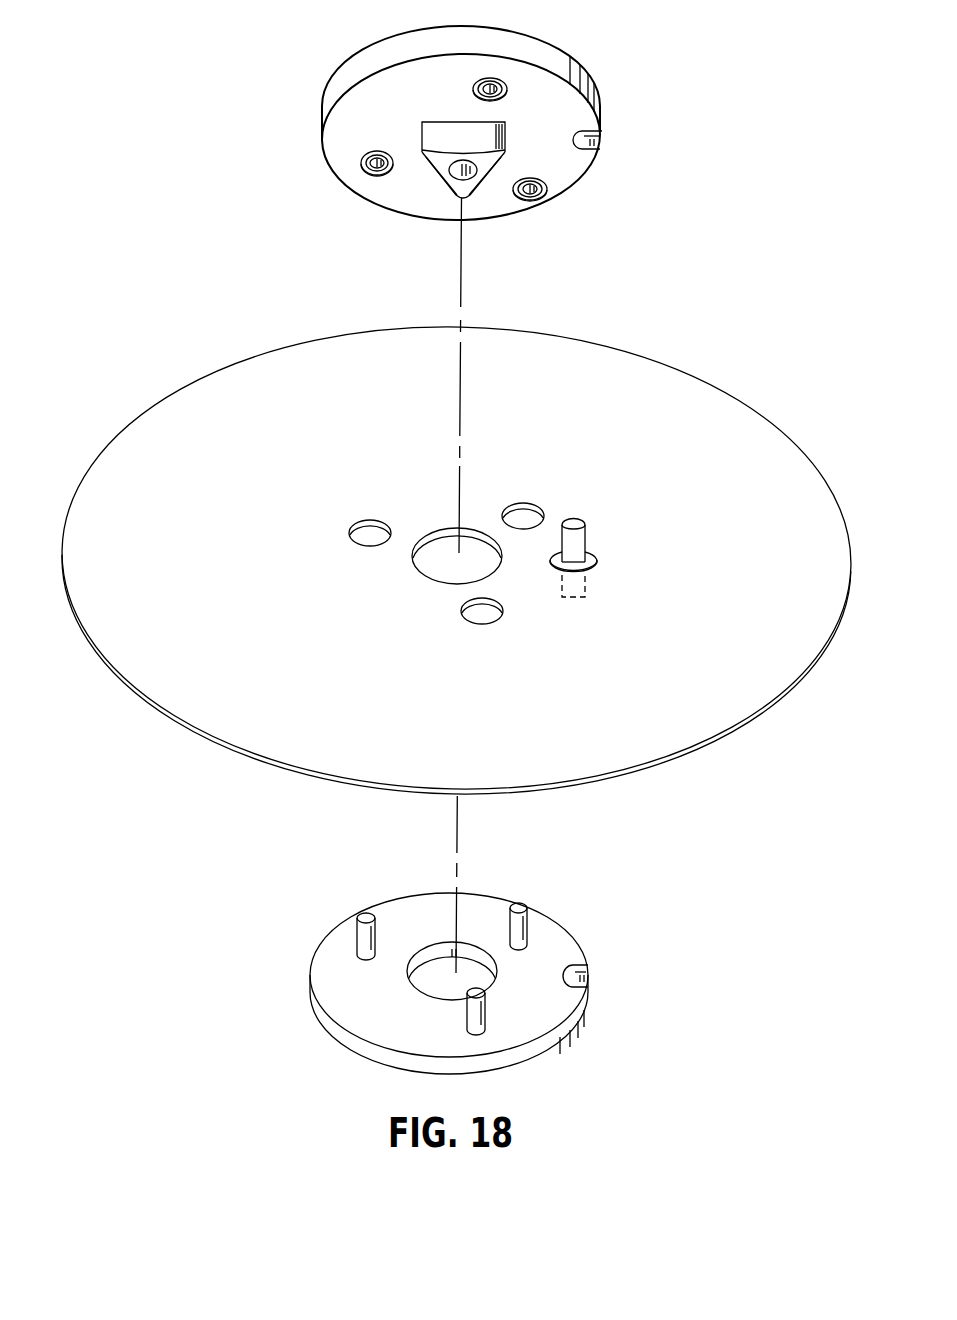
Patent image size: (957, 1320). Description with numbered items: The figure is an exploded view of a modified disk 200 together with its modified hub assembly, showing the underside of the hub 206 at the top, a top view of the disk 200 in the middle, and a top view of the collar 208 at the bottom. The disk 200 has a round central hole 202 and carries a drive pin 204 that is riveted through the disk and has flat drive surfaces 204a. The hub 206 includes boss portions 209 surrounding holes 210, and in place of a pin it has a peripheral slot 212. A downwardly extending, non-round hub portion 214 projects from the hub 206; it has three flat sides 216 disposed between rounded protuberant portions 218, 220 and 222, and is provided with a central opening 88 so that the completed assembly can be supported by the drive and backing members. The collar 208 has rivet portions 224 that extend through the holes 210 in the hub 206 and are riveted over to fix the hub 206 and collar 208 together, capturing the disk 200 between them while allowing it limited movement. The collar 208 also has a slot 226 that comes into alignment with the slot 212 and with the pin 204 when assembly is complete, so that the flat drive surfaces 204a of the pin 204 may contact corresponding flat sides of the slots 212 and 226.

The central opening 88 is at (450, 174).
The modified disk 200 is at (337, 697).
The round central hole 202 is at (438, 531).
The drive pin 204 is at (573, 508).
The flat drive surfaces 204a is at (577, 536).
The hub 206 is at (585, 187).
The collar 208 is at (311, 1003).
The boss portions 209 is at (361, 157).
The holes 210 is at (366, 176).
The peripheral slot 212 is at (603, 136).
The hub portion 214 is at (493, 160).
The flat sides 216 is at (484, 181).
The rounded protuberant portion 218 is at (422, 122).
The rounded protuberant portion 220 is at (504, 122).
The rounded protuberant portion 222 is at (458, 197).
The rivet portions 224 is at (363, 957).
The slot 226 is at (590, 980).